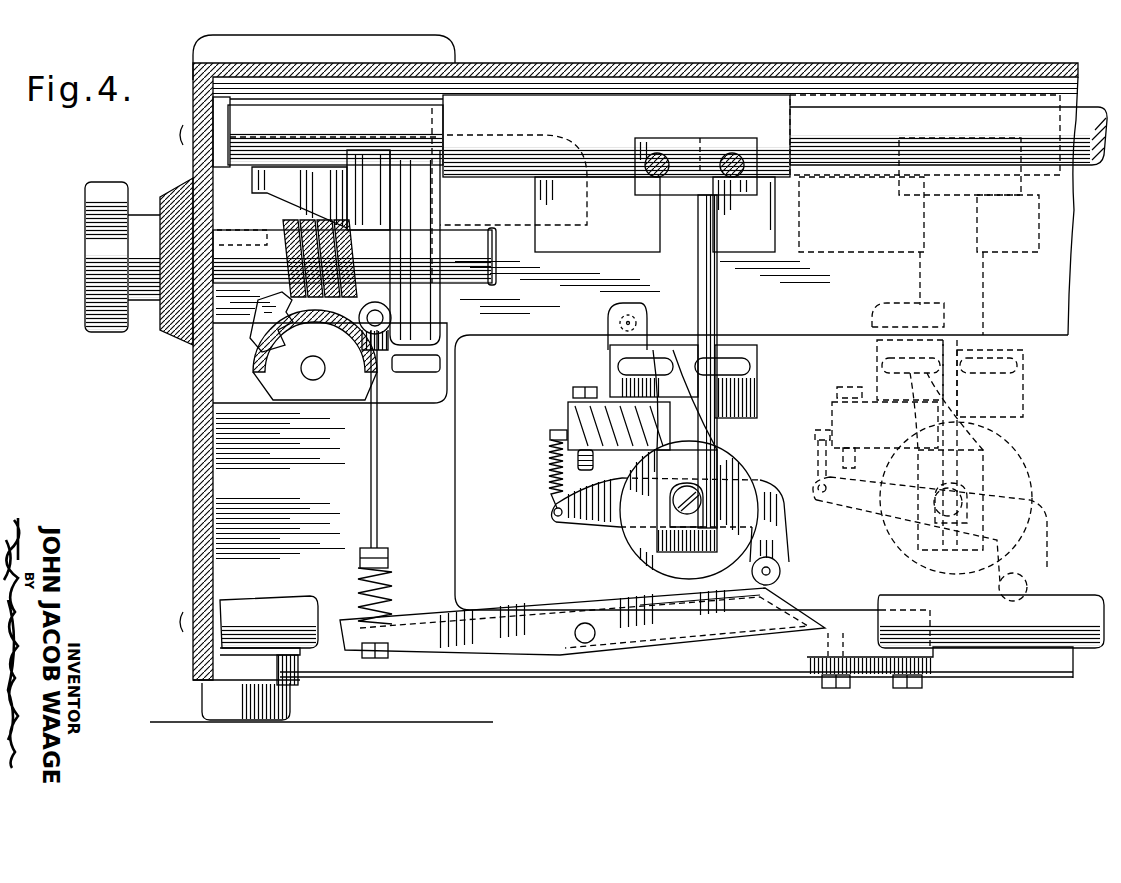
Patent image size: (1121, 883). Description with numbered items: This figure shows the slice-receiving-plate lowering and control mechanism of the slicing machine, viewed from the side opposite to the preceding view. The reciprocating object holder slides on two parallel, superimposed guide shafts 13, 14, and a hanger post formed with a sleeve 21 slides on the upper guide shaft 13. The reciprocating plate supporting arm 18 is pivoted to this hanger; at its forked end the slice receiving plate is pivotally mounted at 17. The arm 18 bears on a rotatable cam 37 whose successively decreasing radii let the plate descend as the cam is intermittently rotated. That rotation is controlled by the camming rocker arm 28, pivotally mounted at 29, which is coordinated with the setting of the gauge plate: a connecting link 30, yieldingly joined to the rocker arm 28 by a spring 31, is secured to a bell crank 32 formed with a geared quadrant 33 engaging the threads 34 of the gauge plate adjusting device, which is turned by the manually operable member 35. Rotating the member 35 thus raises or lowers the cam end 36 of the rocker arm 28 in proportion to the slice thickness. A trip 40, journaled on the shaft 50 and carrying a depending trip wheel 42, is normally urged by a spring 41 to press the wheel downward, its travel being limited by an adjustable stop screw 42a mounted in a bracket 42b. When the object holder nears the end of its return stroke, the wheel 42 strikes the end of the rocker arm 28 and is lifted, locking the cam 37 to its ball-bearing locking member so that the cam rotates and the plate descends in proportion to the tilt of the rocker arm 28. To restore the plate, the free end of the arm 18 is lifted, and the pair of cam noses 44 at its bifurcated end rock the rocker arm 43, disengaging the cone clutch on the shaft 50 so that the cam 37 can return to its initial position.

The guide shaft 13 is at (299, 113).
The guide shaft 14 is at (1052, 606).
The pivot 17 is at (268, 604).
The reciprocating plate supporting arm 18 is at (758, 393).
The sleeve 21 is at (794, 121).
The camming rocker arm 28 is at (526, 650).
The pivot 29 is at (584, 644).
The connecting link 30 is at (380, 481).
The spring 31 is at (390, 585).
The bell crank 32 is at (315, 355).
The geared quadrant 33 is at (267, 350).
The threads 34 is at (272, 283).
The manually operable member 35 is at (112, 184).
The cam end 36 is at (717, 628).
The rotatable cam 37 is at (738, 461).
The trip 40 is at (590, 520).
The spring 41 is at (549, 474).
The trip wheel 42 is at (781, 570).
The adjustable stop screw 42a is at (573, 392).
The bracket 42b is at (568, 410).
The rocker arm 43 is at (684, 383).
The cam noses 44 is at (616, 356).
The shaft 50 is at (703, 514).